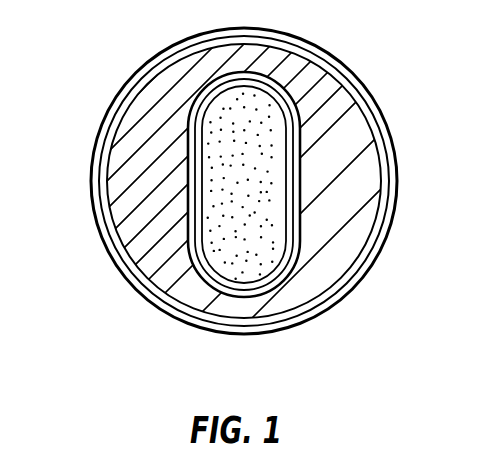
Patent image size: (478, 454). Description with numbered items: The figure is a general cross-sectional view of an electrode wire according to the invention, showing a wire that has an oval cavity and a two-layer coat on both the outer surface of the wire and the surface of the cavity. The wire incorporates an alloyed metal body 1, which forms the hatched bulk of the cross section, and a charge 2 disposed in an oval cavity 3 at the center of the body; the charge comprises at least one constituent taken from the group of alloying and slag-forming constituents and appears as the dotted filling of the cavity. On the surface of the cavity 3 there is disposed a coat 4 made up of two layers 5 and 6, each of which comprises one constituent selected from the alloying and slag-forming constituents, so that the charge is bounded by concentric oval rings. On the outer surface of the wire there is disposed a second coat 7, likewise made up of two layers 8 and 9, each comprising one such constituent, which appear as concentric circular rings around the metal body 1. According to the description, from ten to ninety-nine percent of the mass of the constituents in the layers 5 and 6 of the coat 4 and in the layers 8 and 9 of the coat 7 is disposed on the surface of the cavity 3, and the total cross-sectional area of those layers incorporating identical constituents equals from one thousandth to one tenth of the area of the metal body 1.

The alloyed metal body 1 is at (322, 90).
The charge 2 is at (267, 145).
The oval cavity 3 is at (270, 202).
The coat 4 is at (296, 258).
The layer 5 is at (267, 275).
The layer 6 is at (228, 294).
The coat 7 is at (148, 300).
The layer 8 is at (118, 253).
The layer 9 is at (95, 193).